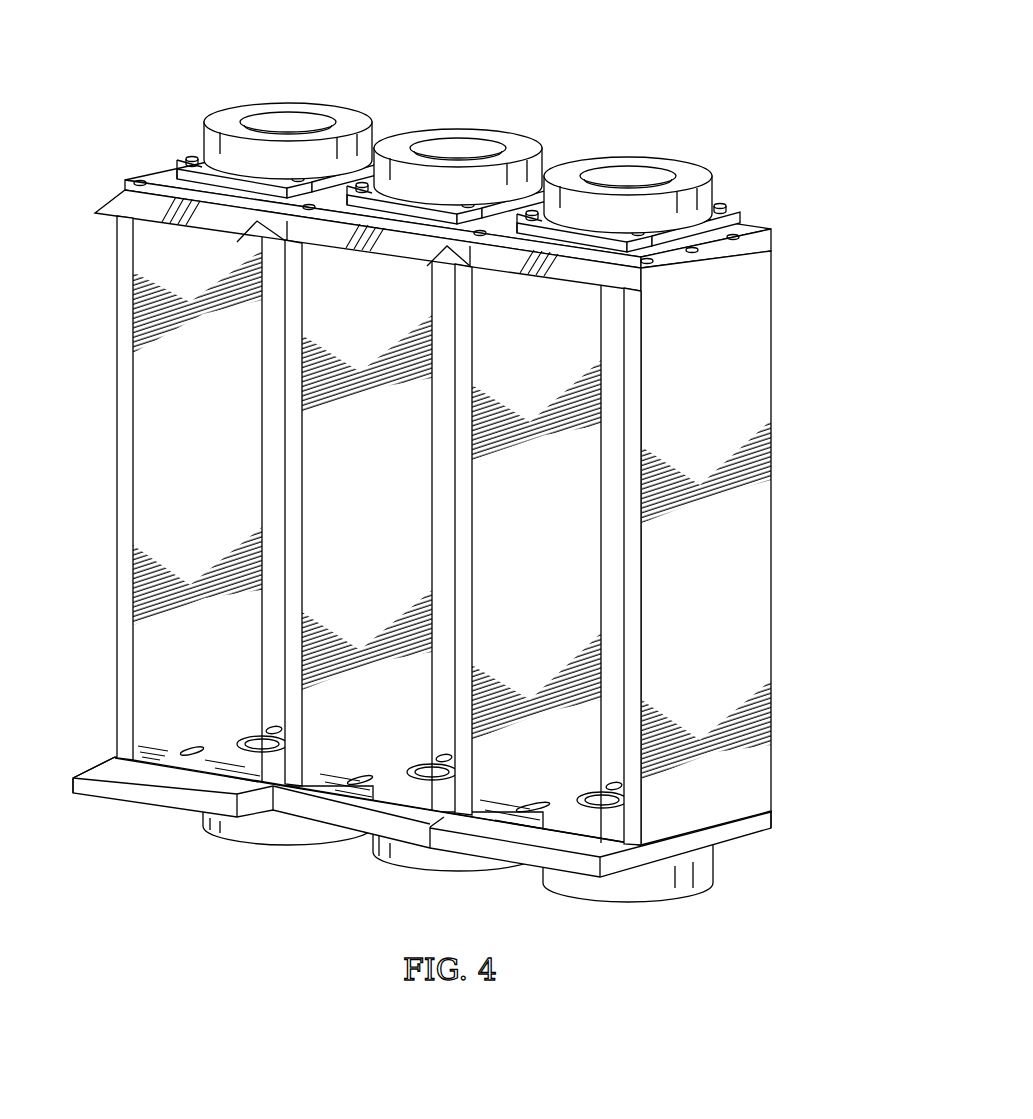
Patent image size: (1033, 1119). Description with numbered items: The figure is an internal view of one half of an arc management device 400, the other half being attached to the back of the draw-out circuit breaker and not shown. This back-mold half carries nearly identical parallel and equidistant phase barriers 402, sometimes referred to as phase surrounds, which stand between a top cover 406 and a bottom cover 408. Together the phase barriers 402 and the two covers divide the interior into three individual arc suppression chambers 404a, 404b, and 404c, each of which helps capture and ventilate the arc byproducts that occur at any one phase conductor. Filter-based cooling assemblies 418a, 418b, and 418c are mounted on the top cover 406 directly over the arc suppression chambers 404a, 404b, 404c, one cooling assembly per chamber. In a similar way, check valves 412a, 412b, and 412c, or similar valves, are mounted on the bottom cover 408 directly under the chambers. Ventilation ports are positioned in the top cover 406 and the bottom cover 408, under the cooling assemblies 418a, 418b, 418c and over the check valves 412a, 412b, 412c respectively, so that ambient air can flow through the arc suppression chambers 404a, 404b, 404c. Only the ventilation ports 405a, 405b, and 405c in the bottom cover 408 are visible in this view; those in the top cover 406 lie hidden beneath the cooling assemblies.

The arc management device 400 is at (445, 481).
The phase barriers 402 is at (117, 495).
The arc suppression chamber 404a is at (493, 581).
The arc suppression chamber 404b is at (323, 509).
The arc suppression chamber 404c is at (156, 381).
The ventilation port 405a is at (256, 742).
The ventilation port 405b is at (426, 770).
The ventilation port 405c is at (595, 797).
The top cover 406 is at (163, 178).
The bottom cover 408 is at (163, 806).
The check valve 412a is at (630, 901).
The check valve 412b is at (445, 873).
The check valve 412c is at (287, 847).
The filter-based cooling assembly 418a is at (666, 162).
The filter-based cooling assembly 418b is at (418, 132).
The filter-based cooling assembly 418c is at (248, 106).